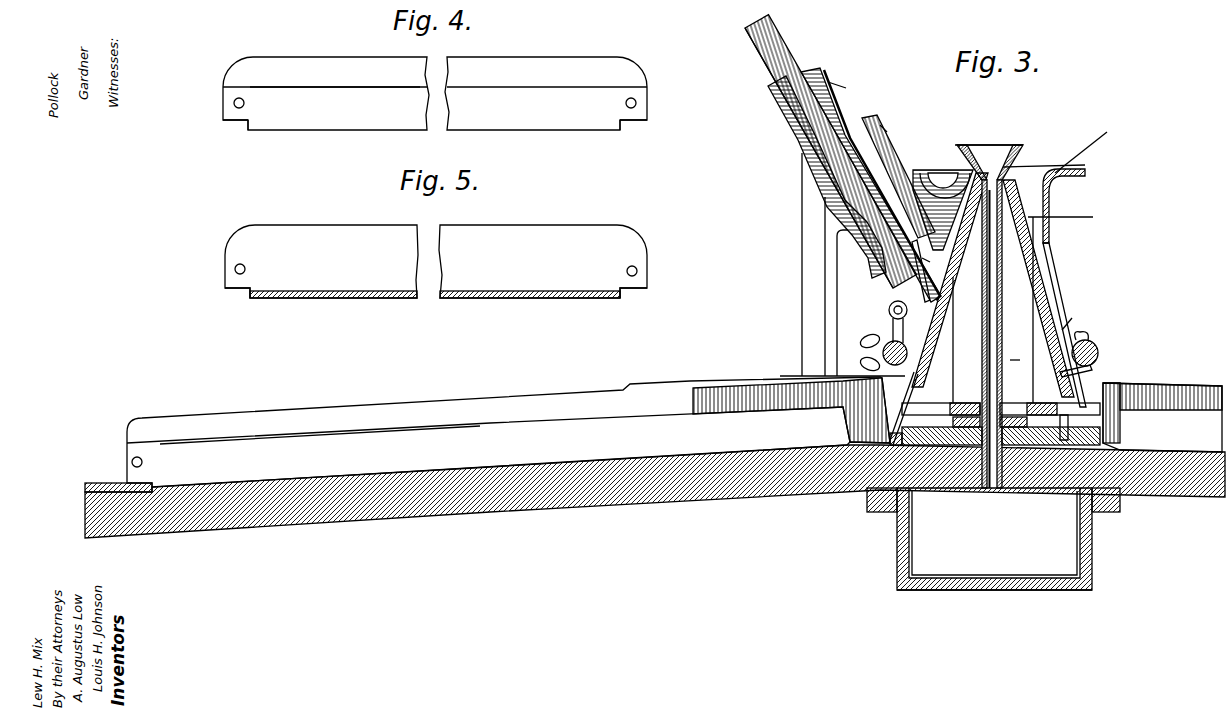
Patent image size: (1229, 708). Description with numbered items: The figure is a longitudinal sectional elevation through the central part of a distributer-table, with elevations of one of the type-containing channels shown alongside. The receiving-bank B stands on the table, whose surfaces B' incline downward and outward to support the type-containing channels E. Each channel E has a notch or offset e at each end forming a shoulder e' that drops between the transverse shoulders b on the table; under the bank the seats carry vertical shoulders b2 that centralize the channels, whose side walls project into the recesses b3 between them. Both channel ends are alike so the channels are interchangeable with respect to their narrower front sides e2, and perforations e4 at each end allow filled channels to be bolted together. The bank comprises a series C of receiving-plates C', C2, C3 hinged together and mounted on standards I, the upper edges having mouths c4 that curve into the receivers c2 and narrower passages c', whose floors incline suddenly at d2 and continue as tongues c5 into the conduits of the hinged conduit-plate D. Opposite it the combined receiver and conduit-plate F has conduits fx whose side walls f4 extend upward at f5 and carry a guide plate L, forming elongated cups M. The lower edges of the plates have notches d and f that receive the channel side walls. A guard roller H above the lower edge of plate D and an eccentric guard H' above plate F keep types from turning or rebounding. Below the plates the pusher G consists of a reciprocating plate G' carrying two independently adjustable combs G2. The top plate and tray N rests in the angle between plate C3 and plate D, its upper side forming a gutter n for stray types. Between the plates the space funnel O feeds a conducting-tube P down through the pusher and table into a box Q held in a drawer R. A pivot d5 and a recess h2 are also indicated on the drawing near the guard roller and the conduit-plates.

In FIG. 3, the receiving-bank B is at (975, 119).
In FIG. 3, the inclined table surface B' is at (655, 491).
In FIG. 3, the transverse shoulder b is at (569, 472).
In FIG. 3, the vertical shoulder b2 is at (1070, 425).
In FIG. 3, the recess b3 is at (900, 431).
In FIG. 3, the series of receiving-plates C is at (819, 158).
In FIG. 3, the first receiving-plate C' is at (827, 149).
In FIG. 3, the middle receiving-plate C2 is at (870, 178).
In FIG. 3, the top receiving-plate C3 is at (898, 168).
In FIG. 3, the type passage c' is at (882, 185).
In FIG. 3, the type receiver c2 is at (840, 90).
In FIG. 3, the concavity or mouth c4 is at (869, 128).
In FIG. 3, the projecting tongue c5 is at (942, 325).
In FIG. 3, the conduit-plate D is at (950, 280).
In FIG. 3, the notch d is at (925, 271).
In FIG. 3, the inclined floor portion d2 is at (928, 254).
In FIG. 3, the pivot bolt d5 is at (906, 327).
In FIG. 4, the type-containing channel E is at (435, 93).
In FIG. 5, the type-containing channel E is at (436, 261).
In FIG. 3, the type-containing channel E is at (674, 426).
In FIG. 4, the notch or offset e is at (435, 129).
In FIG. 5, the notch or offset e is at (447, 294).
In FIG. 4, the shoulder e' is at (442, 138).
In FIG. 5, the shoulder e' is at (436, 305).
In FIG. 4, the front side of channel e2 is at (402, 101).
In FIG. 3, the front side of channel e2 is at (668, 434).
In FIG. 4, the perforation e4 is at (244, 99).
In FIG. 5, the perforation e4 is at (246, 267).
In FIG. 3, the perforation e4 is at (147, 462).
In FIG. 3, the combined receiver and conduit-plate F is at (1039, 291).
In FIG. 3, the notch f is at (1068, 325).
In FIG. 3, the side wall of conduit f4 is at (1062, 210).
In FIG. 3, the upper extremity of side wall f5 is at (1088, 147).
In FIG. 3, the conduit fx is at (1068, 327).
In FIG. 3, the pusher G is at (1001, 414).
In FIG. 3, the reciprocating plate G' is at (990, 423).
In FIG. 3, the pusher comb G2 is at (1001, 401).
In FIG. 3, the guard roller H is at (827, 177).
In FIG. 3, the guard eccentric H' is at (1093, 345).
In FIG. 3, the slot h2 is at (1015, 354).
In FIG. 3, the standard I is at (825, 264).
In FIG. 3, the wing nut K is at (886, 345).
In FIG. 3, the face plate or guide L is at (1064, 206).
In FIG. 3, the elongated cup or receiver M is at (1044, 173).
In FIG. 3, the combined top plate and tray N is at (943, 202).
In FIG. 3, the gutter n is at (945, 185).
In FIG. 3, the funnel or cup O is at (990, 150).
In FIG. 3, the conducting-tube P is at (997, 334).
In FIG. 3, the box Q is at (993, 539).
In FIG. 3, the drawer R is at (980, 578).